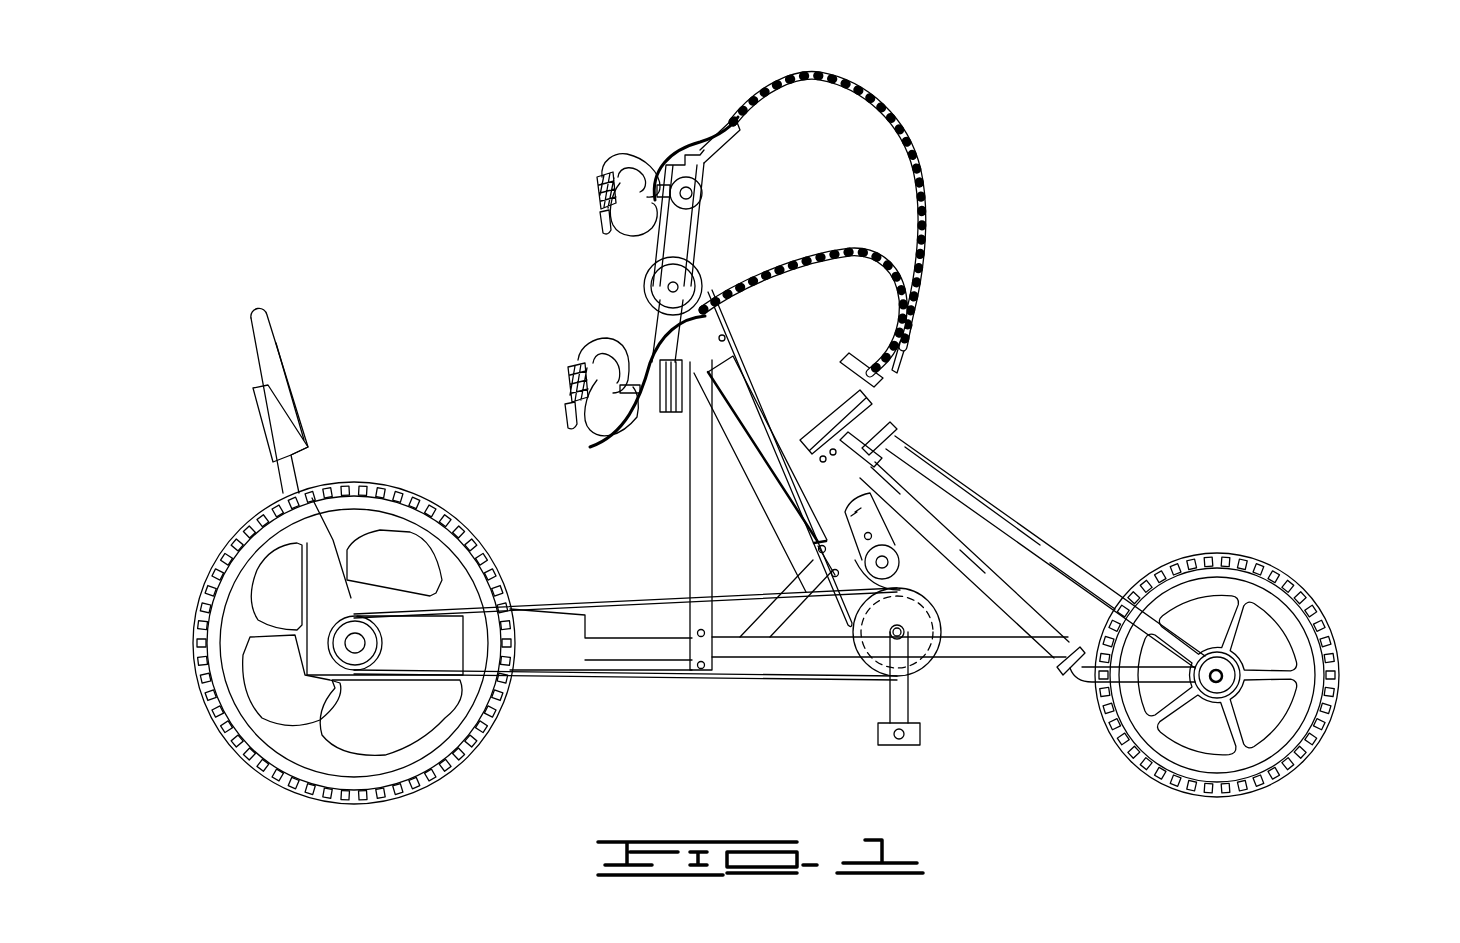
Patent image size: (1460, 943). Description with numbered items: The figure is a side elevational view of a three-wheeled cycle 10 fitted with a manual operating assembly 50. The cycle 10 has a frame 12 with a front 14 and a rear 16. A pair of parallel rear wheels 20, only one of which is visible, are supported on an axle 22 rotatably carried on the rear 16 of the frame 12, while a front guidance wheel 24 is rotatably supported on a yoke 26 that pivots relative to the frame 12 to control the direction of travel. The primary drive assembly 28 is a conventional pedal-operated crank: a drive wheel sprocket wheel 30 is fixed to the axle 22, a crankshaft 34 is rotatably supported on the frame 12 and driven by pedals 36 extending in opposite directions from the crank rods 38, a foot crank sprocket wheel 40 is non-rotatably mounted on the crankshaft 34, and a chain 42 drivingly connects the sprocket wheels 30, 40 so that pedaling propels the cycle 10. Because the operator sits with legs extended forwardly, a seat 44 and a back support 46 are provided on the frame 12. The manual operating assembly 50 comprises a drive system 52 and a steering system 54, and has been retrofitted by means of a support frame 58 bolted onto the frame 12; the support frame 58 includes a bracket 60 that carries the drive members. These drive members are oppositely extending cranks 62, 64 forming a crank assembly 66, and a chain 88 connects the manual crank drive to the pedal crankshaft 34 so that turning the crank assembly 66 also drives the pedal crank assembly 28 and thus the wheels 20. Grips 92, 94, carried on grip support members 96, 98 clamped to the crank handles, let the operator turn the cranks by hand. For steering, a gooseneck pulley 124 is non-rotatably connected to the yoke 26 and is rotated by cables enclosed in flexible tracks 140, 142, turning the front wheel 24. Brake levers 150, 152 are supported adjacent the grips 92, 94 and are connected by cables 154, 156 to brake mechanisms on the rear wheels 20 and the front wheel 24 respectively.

The cycle 10 is at (773, 430).
The frame 12 is at (995, 491).
The front 14 is at (1110, 567).
The rear 16 is at (265, 464).
The rear wheels 20 is at (243, 524).
The axle 22 is at (353, 645).
The front guidance wheel 24 is at (1332, 640).
The yoke 26 is at (1155, 672).
The primary drive assembly 28 is at (652, 682).
The drive wheel sprocket wheel 30 is at (368, 655).
The crankshaft 34 is at (900, 642).
The pedals 36 is at (920, 736).
The crank rods 38 is at (892, 702).
The foot crank sprocket wheel 40 is at (862, 690).
The chain 42 is at (636, 600).
The seat 44 is at (528, 660).
The back support 46 is at (262, 358).
The manual operating assembly 50 is at (908, 195).
The drive system 52 is at (748, 469).
The steering system 54 is at (860, 305).
The support frame 58 is at (686, 526).
The bracket 60 is at (745, 318).
The crank 62 is at (680, 245).
The crank 64 is at (650, 312).
The crank assembly 66 is at (710, 221).
The chain 88 is at (745, 368).
The grip 92 is at (600, 176).
The grip 94 is at (578, 360).
The grip support member 96 is at (623, 153).
The grip support member 98 is at (566, 396).
The gooseneck pulley 124 is at (845, 410).
The flexible track 140 is at (870, 80).
The flexible track 142 is at (873, 233).
The brake lever 150 is at (657, 152).
The brake lever 152 is at (600, 342).
The cable 154 is at (605, 232).
The cable 156 is at (590, 433).